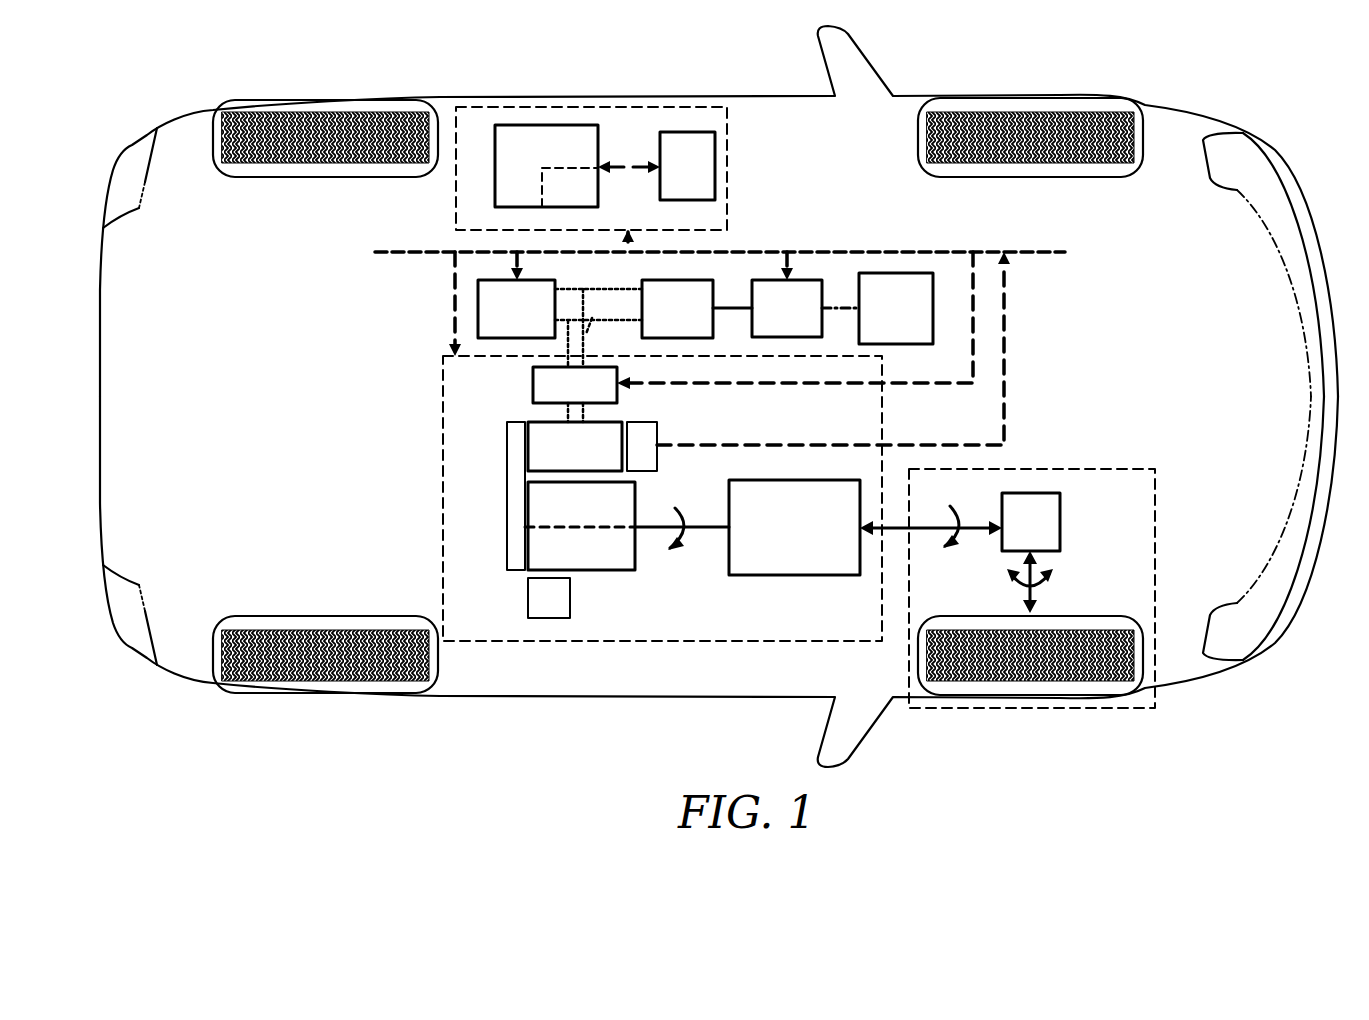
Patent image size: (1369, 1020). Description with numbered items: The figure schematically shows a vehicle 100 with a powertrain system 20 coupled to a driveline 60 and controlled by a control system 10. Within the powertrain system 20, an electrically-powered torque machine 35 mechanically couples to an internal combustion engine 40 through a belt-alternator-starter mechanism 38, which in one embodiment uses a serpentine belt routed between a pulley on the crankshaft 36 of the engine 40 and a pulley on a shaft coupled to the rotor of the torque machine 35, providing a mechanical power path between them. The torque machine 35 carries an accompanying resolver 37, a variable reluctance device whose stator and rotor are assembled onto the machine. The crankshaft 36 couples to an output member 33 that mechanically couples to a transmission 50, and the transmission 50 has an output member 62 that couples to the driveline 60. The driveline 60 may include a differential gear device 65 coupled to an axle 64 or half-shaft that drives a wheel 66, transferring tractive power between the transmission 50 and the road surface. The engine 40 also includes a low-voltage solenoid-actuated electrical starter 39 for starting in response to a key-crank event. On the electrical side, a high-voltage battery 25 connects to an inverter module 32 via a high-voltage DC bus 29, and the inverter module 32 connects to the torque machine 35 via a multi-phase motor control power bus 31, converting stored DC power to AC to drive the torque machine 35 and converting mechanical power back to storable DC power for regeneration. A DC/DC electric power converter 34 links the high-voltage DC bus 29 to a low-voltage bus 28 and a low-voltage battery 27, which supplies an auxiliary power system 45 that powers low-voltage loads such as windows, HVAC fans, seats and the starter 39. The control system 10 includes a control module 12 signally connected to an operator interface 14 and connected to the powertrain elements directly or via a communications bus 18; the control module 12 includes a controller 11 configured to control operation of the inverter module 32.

The vehicle 100 is at (719, 396).
The control system 10 is at (591, 168).
The control module 12 is at (546, 166).
The controller 11 is at (570, 187).
The operator interface 14 is at (656, 166).
The communications bus 18 is at (432, 252).
The high-voltage battery 25 is at (516, 309).
The DC/DC electric power converter 34 is at (677, 309).
The low-voltage battery 27 is at (805, 308).
The auxiliary power system 45 is at (896, 308).
The low-voltage bus 28 is at (735, 308).
The high-voltage DC bus 29 is at (614, 320).
The powertrain system 20 is at (882, 400).
The inverter module 32 is at (575, 385).
The multi-phase motor control power bus 31 is at (567, 415).
The electrically-powered torque machine 35 is at (575, 446).
The resolver 37 is at (643, 422).
The belt-alternator-starter mechanism 38 is at (507, 498).
The internal combustion engine 40 is at (581, 526).
The low-voltage solenoid-actuated electrical starter 39 is at (528, 607).
The crankshaft 36 is at (597, 527).
The output member 33 is at (703, 530).
The transmission 50 is at (794, 527).
The output member 62 is at (898, 528).
The driveline 60 is at (1065, 469).
The differential gear device 65 is at (1031, 553).
The axle 64 is at (1043, 575).
The wheel 66 is at (989, 613).